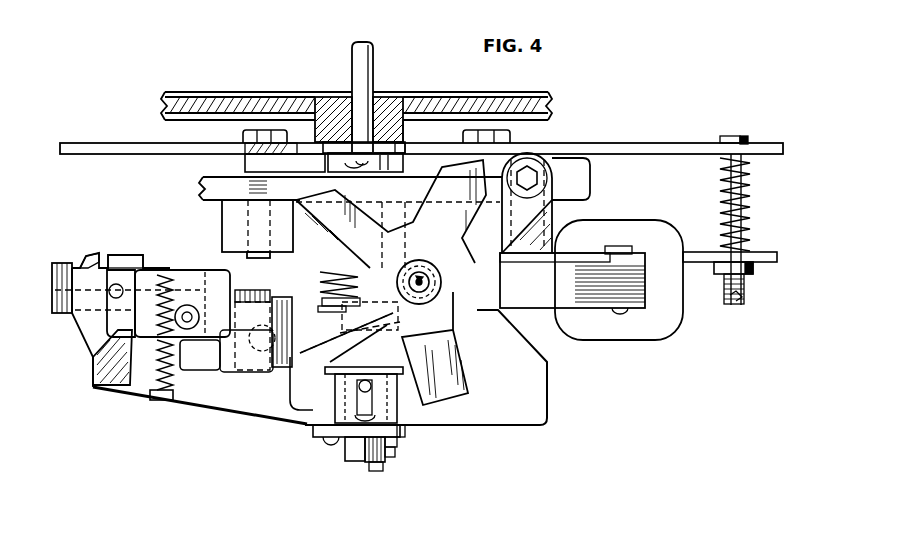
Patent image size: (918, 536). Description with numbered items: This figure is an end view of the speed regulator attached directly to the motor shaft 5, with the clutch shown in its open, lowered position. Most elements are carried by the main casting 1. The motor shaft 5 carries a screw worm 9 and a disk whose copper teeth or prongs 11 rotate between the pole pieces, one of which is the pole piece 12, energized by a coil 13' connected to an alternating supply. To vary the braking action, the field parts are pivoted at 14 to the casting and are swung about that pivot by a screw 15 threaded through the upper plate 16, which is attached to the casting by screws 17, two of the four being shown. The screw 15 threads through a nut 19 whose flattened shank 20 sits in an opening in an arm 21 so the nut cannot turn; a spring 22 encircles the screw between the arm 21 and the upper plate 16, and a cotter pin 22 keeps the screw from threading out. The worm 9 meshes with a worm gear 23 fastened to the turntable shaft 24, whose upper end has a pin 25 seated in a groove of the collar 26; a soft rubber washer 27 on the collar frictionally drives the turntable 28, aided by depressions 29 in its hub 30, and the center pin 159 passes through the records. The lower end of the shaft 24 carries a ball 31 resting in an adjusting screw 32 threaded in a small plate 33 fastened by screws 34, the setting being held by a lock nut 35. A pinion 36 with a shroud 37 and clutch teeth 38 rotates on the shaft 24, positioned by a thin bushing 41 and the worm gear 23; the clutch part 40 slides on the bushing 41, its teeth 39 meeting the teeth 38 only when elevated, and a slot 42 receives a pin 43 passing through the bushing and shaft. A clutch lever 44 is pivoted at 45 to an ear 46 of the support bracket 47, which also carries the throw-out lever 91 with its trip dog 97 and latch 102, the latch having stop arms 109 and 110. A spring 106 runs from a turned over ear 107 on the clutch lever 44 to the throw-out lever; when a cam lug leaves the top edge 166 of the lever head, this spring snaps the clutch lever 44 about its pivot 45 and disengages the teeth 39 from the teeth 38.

The main casting 1 is at (506, 419).
The shaft 5 is at (441, 285).
The screw worm 9 is at (425, 268).
The teeth or prongs 11 is at (352, 212).
The pole piece 12 is at (525, 308).
The coil 13' is at (621, 268).
The pivot 14 is at (530, 176).
The screw 15 is at (744, 140).
The upper plate 16 is at (665, 150).
The screws 17 is at (243, 137).
The sleeve or nut 19 is at (720, 273).
The flattened shank 20 is at (746, 250).
The arm 21 is at (779, 258).
The spring 22 is at (752, 199).
The worm gear 23 is at (323, 273).
The turntable shaft 24 is at (372, 105).
The pin 25 is at (363, 168).
The collar 26 is at (328, 158).
The washer 27 is at (405, 150).
The turntable 28 is at (548, 98).
The depressions 29 is at (405, 140).
The hub 30 is at (400, 120).
The ball 31 is at (403, 429).
The adjusting screw 32 is at (375, 473).
The small plate 33 is at (396, 446).
The screws 34 is at (327, 446).
The lock nut 35 is at (349, 462).
The pinion 36 is at (325, 297).
The shroud 37 is at (330, 307).
The clutch teeth 38 is at (395, 326).
The clutch teeth 39 is at (332, 330).
The clutch part 40 is at (325, 428).
The bushing 41 is at (390, 396).
The slot 42 is at (357, 398).
The pin 43 is at (357, 383).
The clutch lever 44 is at (270, 410).
The pivot 45 is at (242, 380).
The ear 46 is at (283, 296).
The support bracket 47 is at (247, 297).
The throw-out lever 91 is at (197, 275).
The trip dog 97 is at (206, 338).
The latch 102 is at (78, 335).
The spring 106 is at (158, 385).
The turned over ear 107 is at (160, 401).
The arm 109 is at (90, 262).
The arm 110 is at (126, 262).
The pin 159 is at (374, 58).
The top edge 166 is at (157, 345).